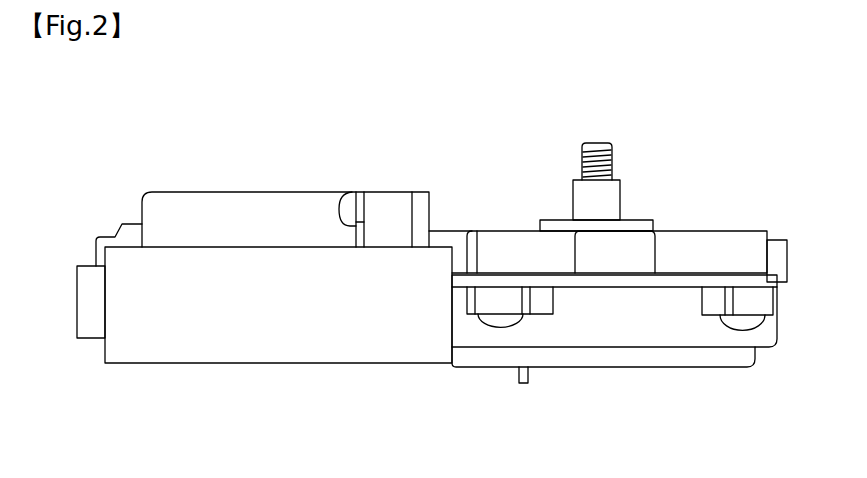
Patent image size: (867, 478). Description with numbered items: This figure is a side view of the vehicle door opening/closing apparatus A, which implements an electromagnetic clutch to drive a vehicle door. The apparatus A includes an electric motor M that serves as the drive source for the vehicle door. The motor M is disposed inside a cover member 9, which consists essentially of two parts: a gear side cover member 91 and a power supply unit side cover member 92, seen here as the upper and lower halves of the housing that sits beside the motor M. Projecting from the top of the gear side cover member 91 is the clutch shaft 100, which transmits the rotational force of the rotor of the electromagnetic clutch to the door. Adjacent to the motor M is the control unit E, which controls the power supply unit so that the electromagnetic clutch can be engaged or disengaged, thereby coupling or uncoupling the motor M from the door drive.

The vehicle door opening/closing apparatus A is at (462, 140).
The electric motor M is at (258, 192).
The control unit E is at (225, 362).
The cover member 9 is at (608, 300).
The gear side cover member 91 is at (702, 237).
The power supply unit side cover member 92 is at (673, 358).
The clutch shaft 100 is at (578, 188).